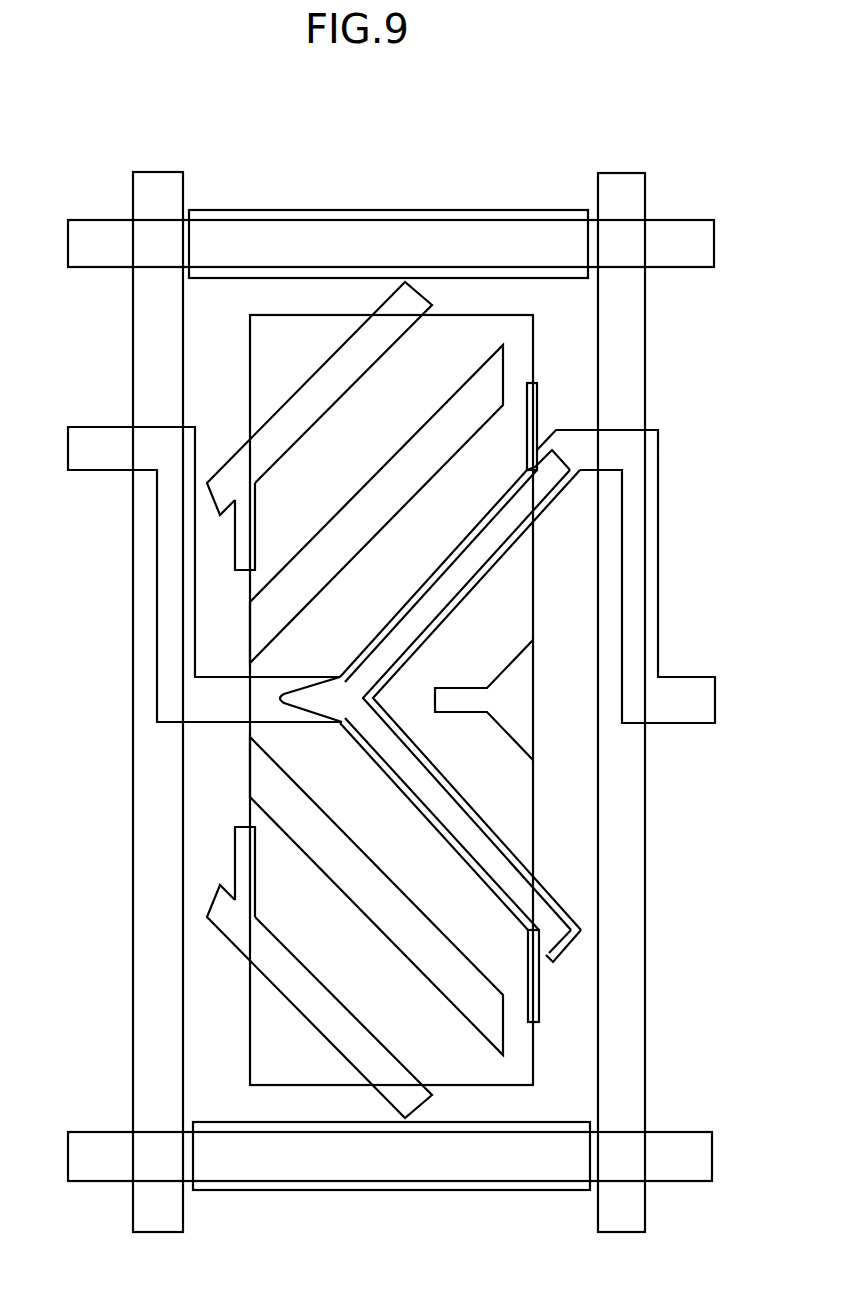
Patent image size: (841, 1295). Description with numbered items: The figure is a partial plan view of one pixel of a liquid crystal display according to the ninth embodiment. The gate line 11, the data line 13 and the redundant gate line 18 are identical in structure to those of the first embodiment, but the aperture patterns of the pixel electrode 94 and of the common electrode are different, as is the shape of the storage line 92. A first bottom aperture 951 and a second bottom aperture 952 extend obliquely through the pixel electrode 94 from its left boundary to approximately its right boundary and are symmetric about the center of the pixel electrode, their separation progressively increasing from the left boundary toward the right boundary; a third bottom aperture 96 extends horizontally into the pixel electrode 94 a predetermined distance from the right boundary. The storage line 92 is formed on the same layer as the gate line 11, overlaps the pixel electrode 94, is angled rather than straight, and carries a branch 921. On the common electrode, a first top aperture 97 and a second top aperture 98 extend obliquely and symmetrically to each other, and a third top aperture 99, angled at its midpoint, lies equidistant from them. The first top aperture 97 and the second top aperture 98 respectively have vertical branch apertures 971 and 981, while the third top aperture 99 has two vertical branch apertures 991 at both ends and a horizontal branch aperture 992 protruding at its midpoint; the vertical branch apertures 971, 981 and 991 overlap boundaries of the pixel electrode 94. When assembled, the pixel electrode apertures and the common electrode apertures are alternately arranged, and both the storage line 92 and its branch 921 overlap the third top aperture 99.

The gate line 11 is at (499, 212).
The data line 13 is at (133, 328).
The redundant gate line 18 is at (282, 210).
The storage line 92 is at (658, 592).
The branch 921 is at (570, 918).
The pixel electrode 94 is at (533, 328).
The first bottom aperture 951 is at (360, 478).
The second bottom aperture 952 is at (362, 848).
The third bottom aperture 96 is at (462, 714).
The first top aperture 97 is at (308, 379).
The vertical branch aperture 971 is at (237, 555).
The second top aperture 98 is at (313, 1024).
The vertical branch aperture 981 is at (243, 845).
The third top aperture 99 is at (457, 603).
The vertical branch apertures 991 is at (537, 400).
The horizontal branch aperture 992 is at (313, 677).